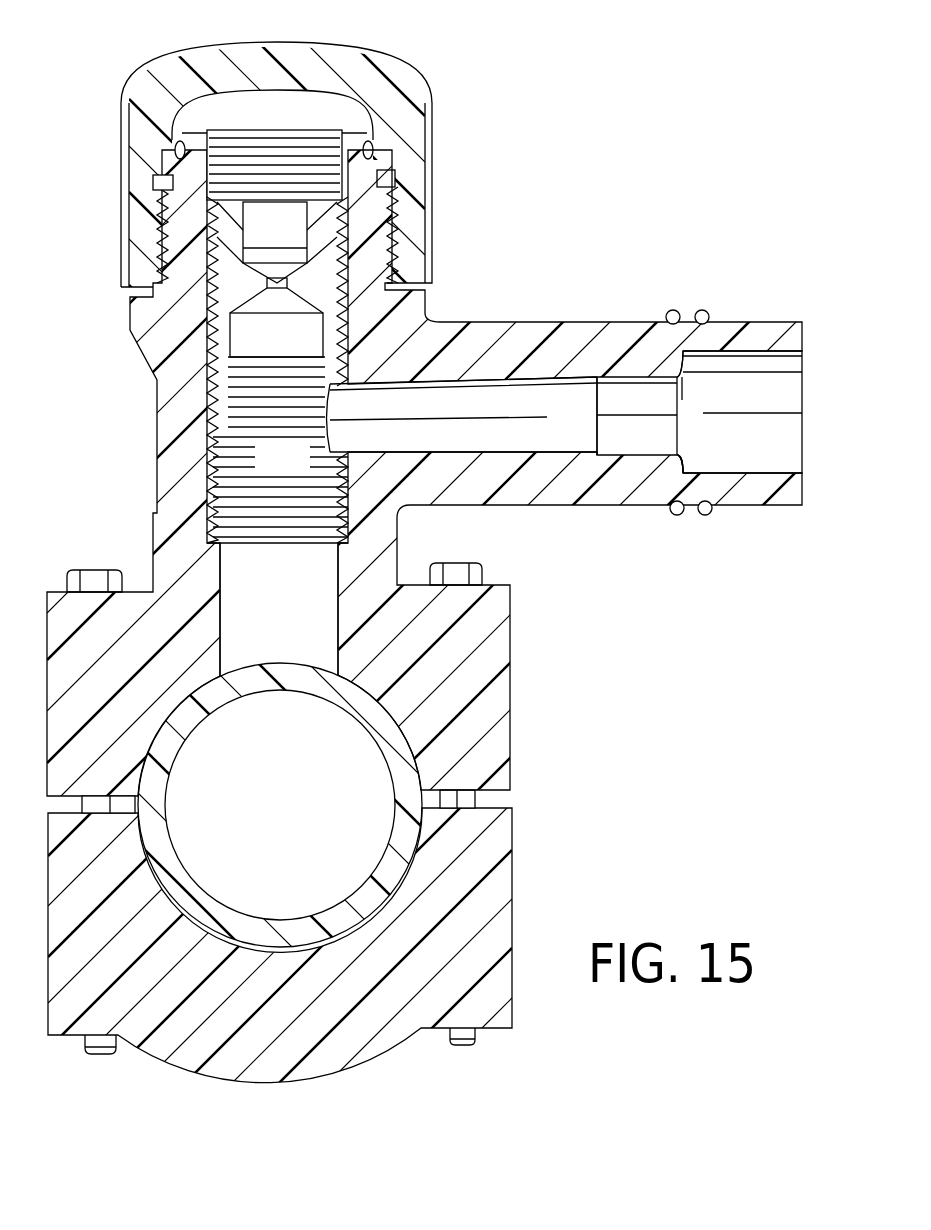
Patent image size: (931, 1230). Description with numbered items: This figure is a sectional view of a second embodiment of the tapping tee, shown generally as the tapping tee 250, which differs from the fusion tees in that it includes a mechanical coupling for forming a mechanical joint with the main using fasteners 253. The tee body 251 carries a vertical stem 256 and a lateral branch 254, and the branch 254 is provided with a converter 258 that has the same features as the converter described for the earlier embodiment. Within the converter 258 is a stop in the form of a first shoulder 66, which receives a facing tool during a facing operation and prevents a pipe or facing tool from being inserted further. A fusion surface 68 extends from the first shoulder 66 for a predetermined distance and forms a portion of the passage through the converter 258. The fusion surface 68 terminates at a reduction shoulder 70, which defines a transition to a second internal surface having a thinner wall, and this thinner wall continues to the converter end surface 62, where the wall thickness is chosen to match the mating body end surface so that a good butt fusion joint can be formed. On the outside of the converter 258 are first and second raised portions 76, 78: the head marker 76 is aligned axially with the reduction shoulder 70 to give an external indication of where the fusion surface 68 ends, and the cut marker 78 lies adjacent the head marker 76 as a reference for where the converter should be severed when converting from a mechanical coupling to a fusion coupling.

The tapping tee 250 is at (526, 196).
The valve body 251 is at (157, 420).
The fasteners 253 is at (90, 570).
The branch 254 is at (533, 300).
The valve stem 256 is at (357, 437).
The converter 258 is at (712, 284).
The converter end surface 62 is at (808, 322).
The first shoulder 66 is at (588, 440).
The fusion surface 68 is at (634, 440).
The reduction shoulder 70 is at (680, 462).
The head marker 76 is at (677, 515).
The cut marker 78 is at (707, 515).